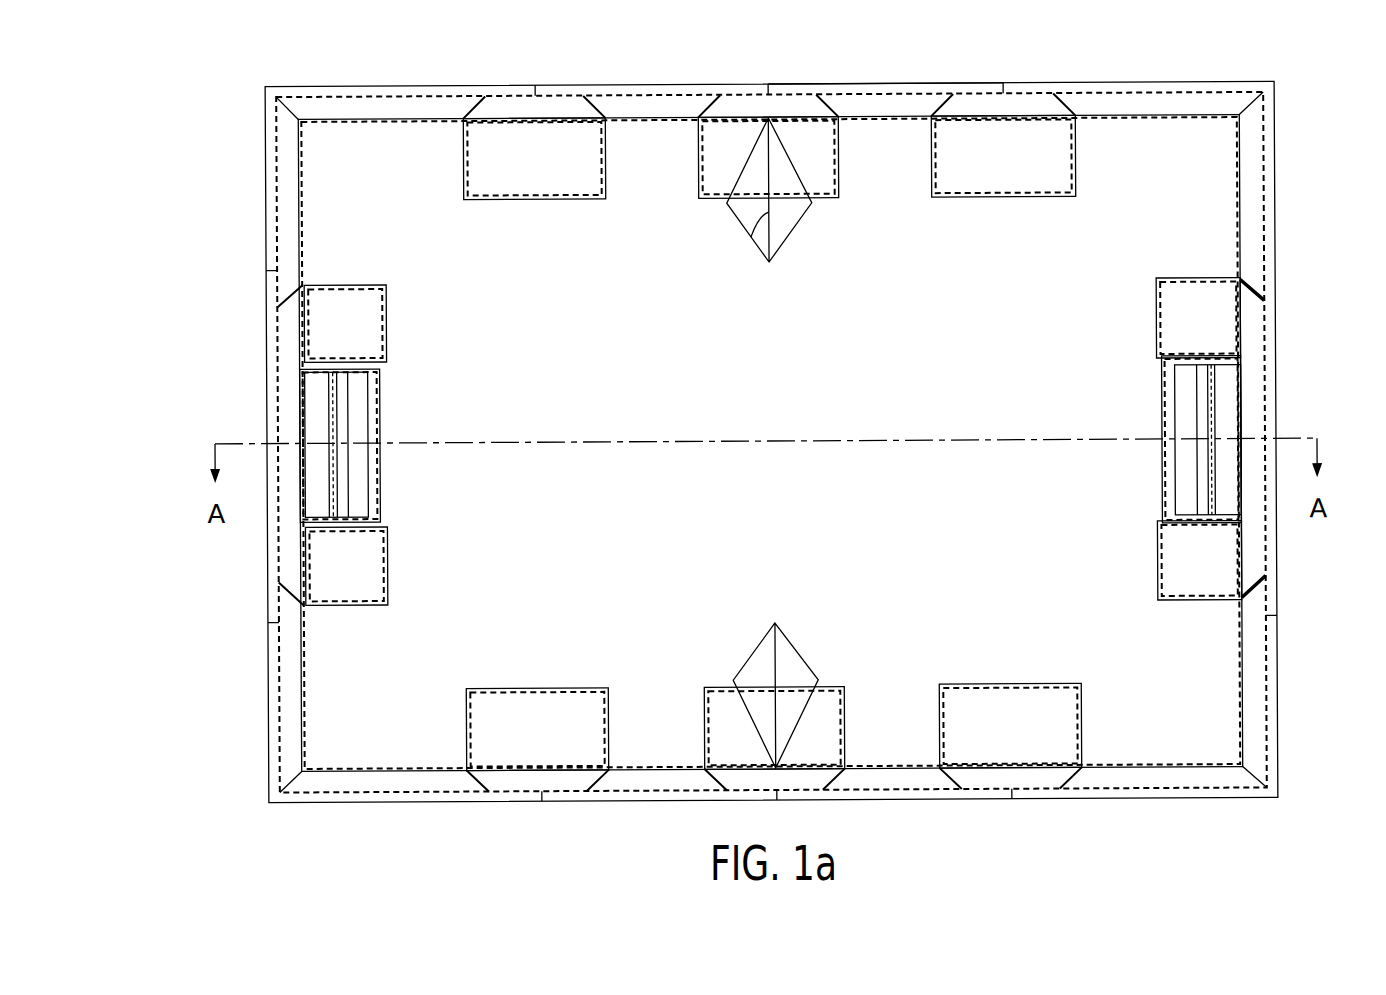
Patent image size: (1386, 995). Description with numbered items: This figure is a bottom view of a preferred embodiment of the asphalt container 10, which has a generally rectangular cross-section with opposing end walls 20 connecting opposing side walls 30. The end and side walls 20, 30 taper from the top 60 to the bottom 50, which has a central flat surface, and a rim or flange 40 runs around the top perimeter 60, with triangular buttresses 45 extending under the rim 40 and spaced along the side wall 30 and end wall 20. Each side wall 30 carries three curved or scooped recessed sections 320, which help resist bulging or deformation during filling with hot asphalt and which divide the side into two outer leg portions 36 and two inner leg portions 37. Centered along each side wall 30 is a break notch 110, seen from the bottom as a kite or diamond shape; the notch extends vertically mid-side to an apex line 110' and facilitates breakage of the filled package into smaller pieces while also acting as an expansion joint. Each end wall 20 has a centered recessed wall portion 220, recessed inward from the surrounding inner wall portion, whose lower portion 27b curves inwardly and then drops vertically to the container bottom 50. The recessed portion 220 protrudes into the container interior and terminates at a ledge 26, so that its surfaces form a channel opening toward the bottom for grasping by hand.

The container 10 is at (232, 202).
The end wall 20 is at (1277, 668).
The ledge 26 is at (315, 410).
The lower portion of inner surrounding wall portion 27b is at (317, 335).
The side wall 30 is at (1203, 790).
The outer leg portion 36 is at (405, 94).
The inner leg portion 37 is at (660, 95).
The rim 40 is at (1277, 743).
The buttress 45 is at (537, 90).
The container bottom 50 is at (1218, 198).
The top perimeter 60 is at (965, 88).
The break notch 110 is at (796, 443).
The apex line 110' is at (729, 237).
The recessed wall portion 220 is at (382, 430).
The recessed section 320 is at (522, 135).